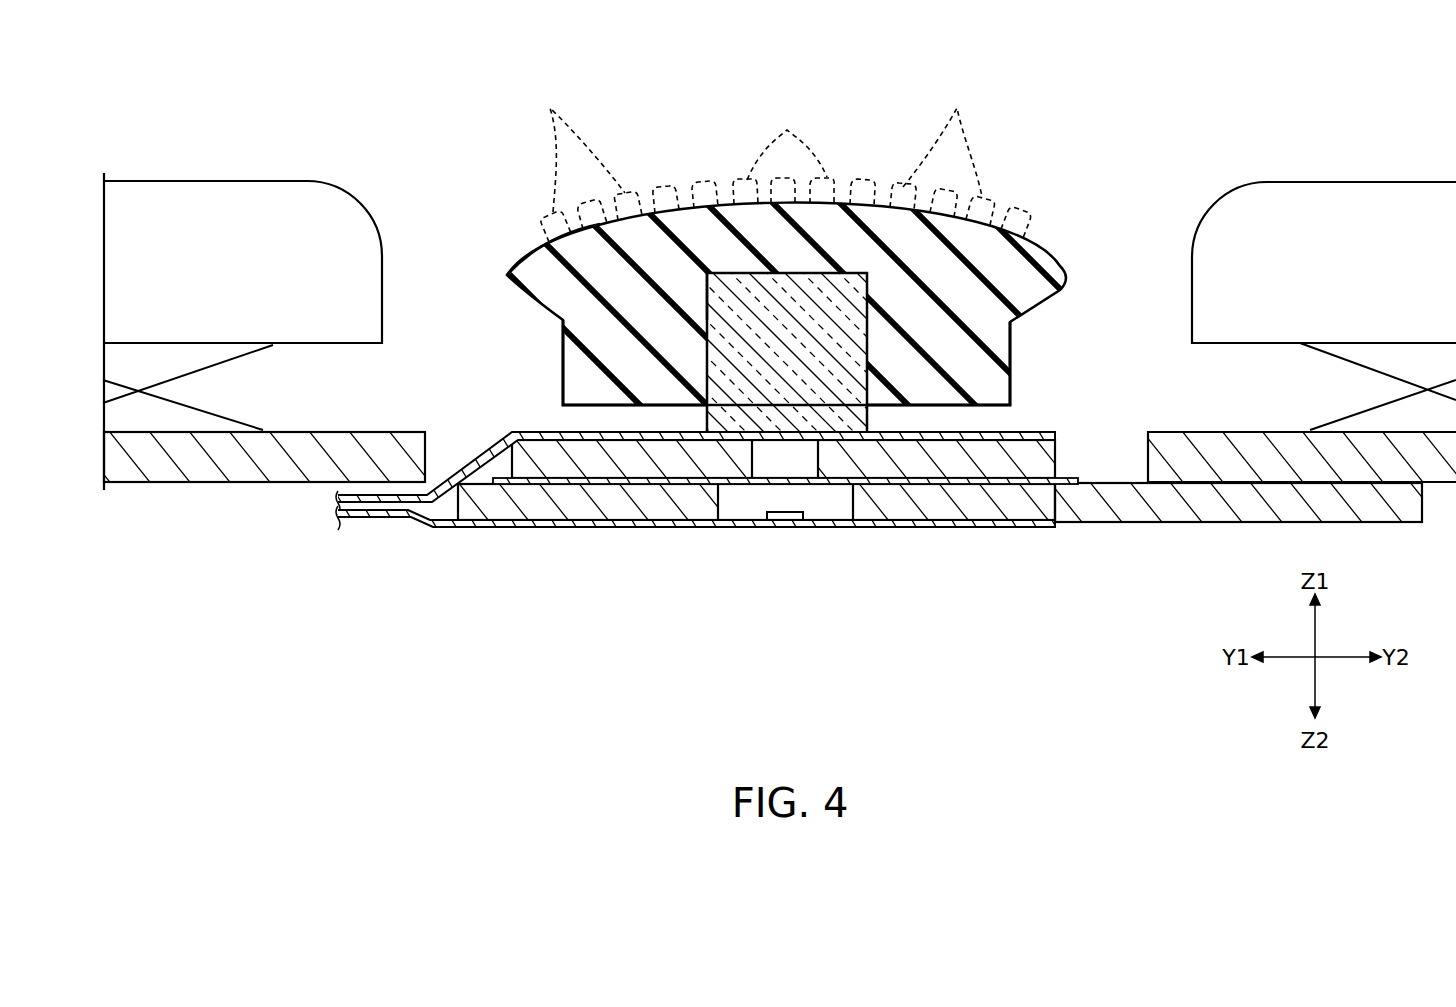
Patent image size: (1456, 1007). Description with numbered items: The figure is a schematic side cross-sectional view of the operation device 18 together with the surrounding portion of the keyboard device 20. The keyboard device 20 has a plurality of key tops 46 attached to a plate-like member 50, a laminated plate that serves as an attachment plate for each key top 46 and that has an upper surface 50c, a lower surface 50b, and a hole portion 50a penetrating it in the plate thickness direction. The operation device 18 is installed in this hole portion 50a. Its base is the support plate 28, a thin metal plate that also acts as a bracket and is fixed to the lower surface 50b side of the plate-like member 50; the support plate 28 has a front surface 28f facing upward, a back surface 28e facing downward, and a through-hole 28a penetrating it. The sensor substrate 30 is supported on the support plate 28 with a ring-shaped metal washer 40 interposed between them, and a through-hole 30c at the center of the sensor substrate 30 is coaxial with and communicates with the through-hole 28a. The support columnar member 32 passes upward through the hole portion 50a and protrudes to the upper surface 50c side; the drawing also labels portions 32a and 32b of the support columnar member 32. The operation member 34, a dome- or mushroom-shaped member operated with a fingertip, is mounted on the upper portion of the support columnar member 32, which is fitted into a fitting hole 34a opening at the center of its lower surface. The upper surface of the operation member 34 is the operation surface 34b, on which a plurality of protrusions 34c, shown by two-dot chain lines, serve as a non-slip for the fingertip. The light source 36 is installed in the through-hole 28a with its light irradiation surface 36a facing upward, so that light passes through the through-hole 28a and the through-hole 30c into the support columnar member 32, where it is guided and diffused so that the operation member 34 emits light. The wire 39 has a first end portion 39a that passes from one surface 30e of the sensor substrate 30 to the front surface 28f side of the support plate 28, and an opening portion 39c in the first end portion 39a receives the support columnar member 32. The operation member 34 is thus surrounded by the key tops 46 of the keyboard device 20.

The keyboard device 20 is at (169, 101).
The key top 46 is at (232, 200).
The operation member 34 is at (1053, 252).
The fitting hole 34a is at (712, 285).
The operation surface 34b is at (522, 257).
The protrusion 34c is at (776, 159).
The support columnar member 32 is at (825, 270).
The pressing projection 32a is at (742, 275).
The flange portion of pressing member 32b is at (707, 362).
The plate-like member 50 is at (728, 503).
The hole portion 50a is at (1130, 482).
The lower surface 50b is at (1242, 486).
The upper surface 50c is at (347, 430).
The wire 39 is at (728, 503).
The first end portion 39a is at (663, 438).
The opening portion 39c is at (845, 438).
The sensor substrate 30 is at (728, 503).
The through-hole 30c is at (752, 457).
The one surface 30e is at (1003, 435).
The support plate 28 is at (728, 503).
The through-hole 28a is at (852, 514).
The back surface 28e is at (985, 518).
The front surface 28f is at (940, 482).
The metal washer 40 is at (1070, 480).
The operation device 18 is at (440, 534).
The light source 36 is at (807, 579).
The light irradiation surface 36a is at (797, 510).